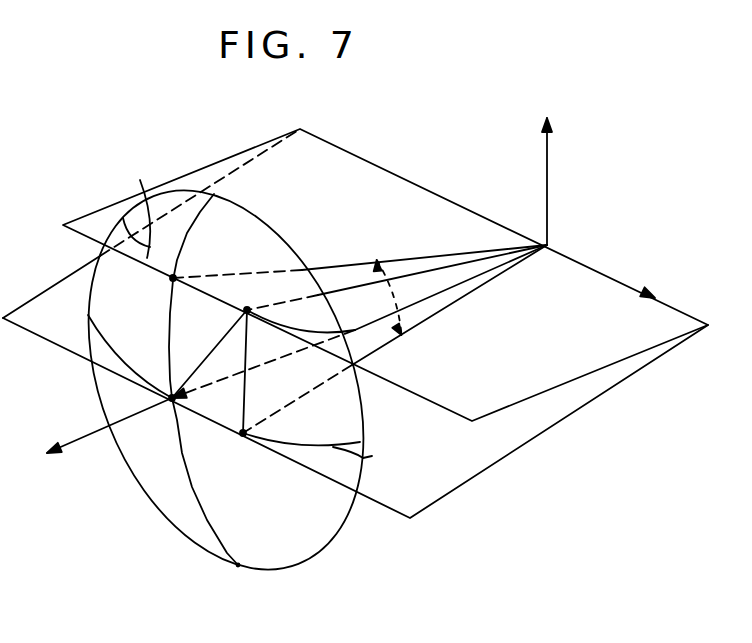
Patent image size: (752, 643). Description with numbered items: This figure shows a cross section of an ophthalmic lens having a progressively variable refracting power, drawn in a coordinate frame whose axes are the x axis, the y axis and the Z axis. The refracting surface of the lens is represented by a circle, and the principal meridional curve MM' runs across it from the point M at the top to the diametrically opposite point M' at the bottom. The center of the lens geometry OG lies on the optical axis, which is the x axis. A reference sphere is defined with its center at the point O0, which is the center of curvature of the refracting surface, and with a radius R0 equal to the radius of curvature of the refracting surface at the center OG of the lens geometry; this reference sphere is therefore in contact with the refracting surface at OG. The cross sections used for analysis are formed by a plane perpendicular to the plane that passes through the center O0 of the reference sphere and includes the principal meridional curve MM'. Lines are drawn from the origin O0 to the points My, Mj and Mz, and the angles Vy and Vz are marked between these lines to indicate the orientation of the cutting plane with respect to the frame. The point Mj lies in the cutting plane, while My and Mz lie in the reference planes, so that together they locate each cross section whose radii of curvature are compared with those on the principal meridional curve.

The principal meridional curve endpoint M is at (214, 368).
The principal meridional curve endpoint M' is at (235, 584).
The projection point My is at (332, 275).
The projection point Mj in plane pi_j Mj is at (364, 289).
The projection point Mz in plane pi_0 Mz is at (380, 358).
The center of the lens geometry OG is at (317, 354).
The center of curvature O0 is at (550, 242).
The radius of curvature R0 is at (281, 382).
The angle Vy is at (378, 290).
The angle Vz is at (398, 332).
The x-axis x is at (96, 436).
The y axis y is at (546, 162).
The z axis Z is at (662, 283).